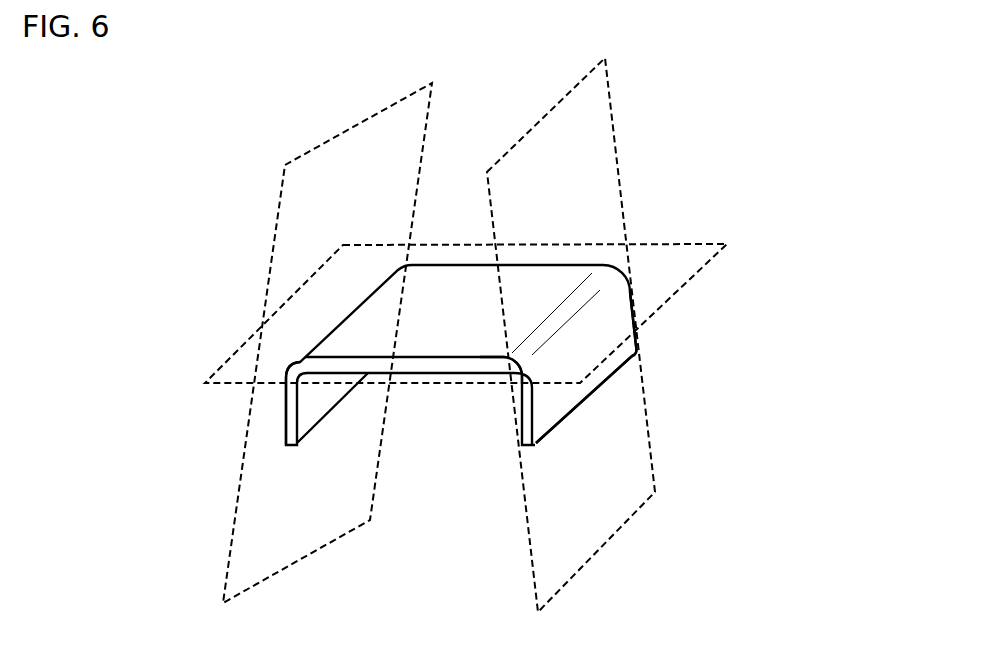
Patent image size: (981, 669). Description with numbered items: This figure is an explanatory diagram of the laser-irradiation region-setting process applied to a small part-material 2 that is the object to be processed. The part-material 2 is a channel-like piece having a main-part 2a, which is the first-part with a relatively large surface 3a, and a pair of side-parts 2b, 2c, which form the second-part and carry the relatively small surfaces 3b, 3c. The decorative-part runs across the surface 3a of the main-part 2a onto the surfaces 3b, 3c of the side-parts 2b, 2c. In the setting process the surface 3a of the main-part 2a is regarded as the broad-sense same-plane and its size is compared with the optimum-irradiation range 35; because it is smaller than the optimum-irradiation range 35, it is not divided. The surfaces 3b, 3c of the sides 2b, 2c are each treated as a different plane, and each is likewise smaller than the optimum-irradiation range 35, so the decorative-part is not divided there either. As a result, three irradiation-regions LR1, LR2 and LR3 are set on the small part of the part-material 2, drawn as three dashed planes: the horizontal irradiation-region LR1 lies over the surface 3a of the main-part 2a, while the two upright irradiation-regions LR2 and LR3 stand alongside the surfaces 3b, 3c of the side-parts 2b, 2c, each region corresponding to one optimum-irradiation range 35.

The part-material 2 is at (439, 325).
The main-part 2a is at (416, 347).
The side-part 2b is at (553, 410).
The side-part 2c is at (283, 427).
The surface of the main-part 3a is at (476, 338).
The surface of the side-part 3b is at (597, 343).
The surface of the side-part 3c is at (286, 396).
The optimum-irradiation range 35 is at (367, 114).
The irradiation-region LR1 is at (652, 242).
The irradiation-region LR2 is at (653, 457).
The irradiation-region LR3 is at (270, 254).